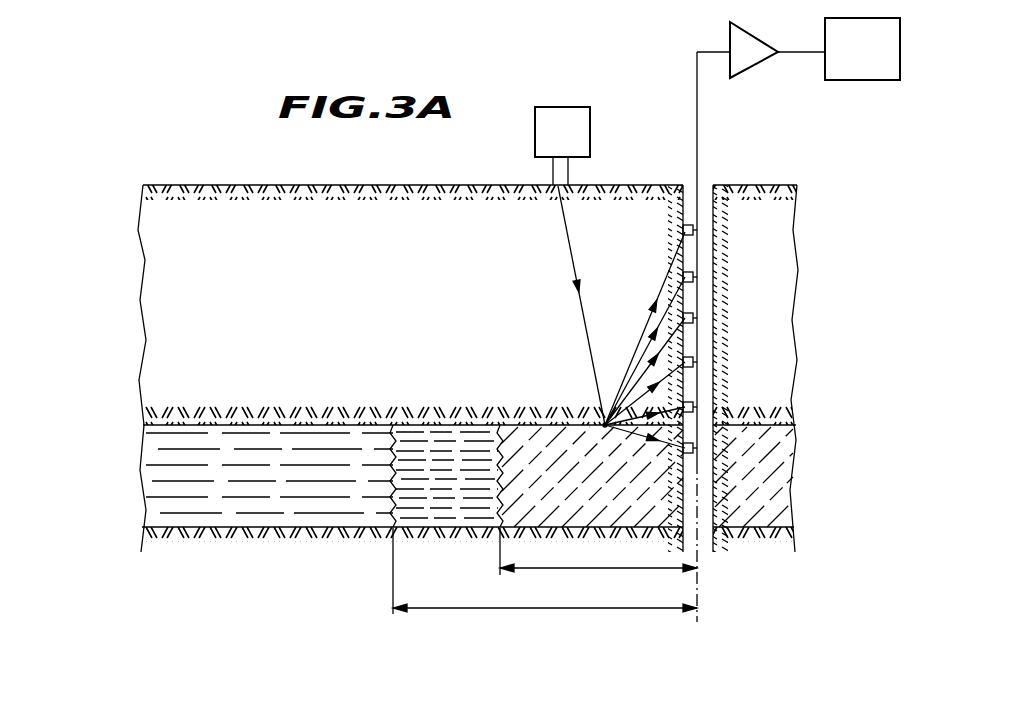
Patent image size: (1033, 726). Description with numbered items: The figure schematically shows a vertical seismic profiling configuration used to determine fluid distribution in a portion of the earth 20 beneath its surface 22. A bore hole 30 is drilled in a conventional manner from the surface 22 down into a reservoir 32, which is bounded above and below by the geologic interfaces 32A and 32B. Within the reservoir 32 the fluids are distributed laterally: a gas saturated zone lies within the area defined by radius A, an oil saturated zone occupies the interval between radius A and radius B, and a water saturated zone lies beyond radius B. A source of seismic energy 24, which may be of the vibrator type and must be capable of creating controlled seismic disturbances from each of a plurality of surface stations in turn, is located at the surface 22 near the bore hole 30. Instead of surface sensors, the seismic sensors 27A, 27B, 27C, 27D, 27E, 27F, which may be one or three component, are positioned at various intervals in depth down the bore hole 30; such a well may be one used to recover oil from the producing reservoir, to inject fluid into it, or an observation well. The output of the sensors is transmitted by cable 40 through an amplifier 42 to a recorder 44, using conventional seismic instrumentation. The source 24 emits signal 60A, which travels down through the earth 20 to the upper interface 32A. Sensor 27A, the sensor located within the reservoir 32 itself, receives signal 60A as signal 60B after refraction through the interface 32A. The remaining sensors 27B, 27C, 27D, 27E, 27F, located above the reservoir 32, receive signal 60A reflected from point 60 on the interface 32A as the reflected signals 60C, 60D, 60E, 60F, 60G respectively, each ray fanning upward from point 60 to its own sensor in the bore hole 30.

The earth 20 is at (213, 290).
The surface 22 is at (178, 185).
The seismic source 24 is at (577, 107).
The seismic sensor 27A is at (692, 458).
The seismic sensor 27B is at (692, 415).
The seismic sensor 27C is at (692, 373).
The seismic sensor 27D is at (692, 331).
The seismic sensor 27E is at (692, 289).
The seismic sensor 27F is at (692, 243).
The bore hole 30 is at (712, 186).
The reservoir 32 is at (165, 481).
The geologic interface 32A is at (190, 425).
The geologic interface 32B is at (182, 535).
The cable 40 is at (700, 123).
The amplifier 42 is at (748, 68).
The recorder 44 is at (846, 80).
The point 60 is at (600, 426).
The signal 60A is at (566, 229).
The refracted signal 60B is at (609, 465).
The reflected signal 60C is at (640, 427).
The reflected signal 60D is at (655, 382).
The reflected signal 60E is at (655, 353).
The reflected signal 60F is at (660, 320).
The reflected signal 60G is at (676, 250).
The radius A is at (603, 570).
The radius B is at (512, 608).